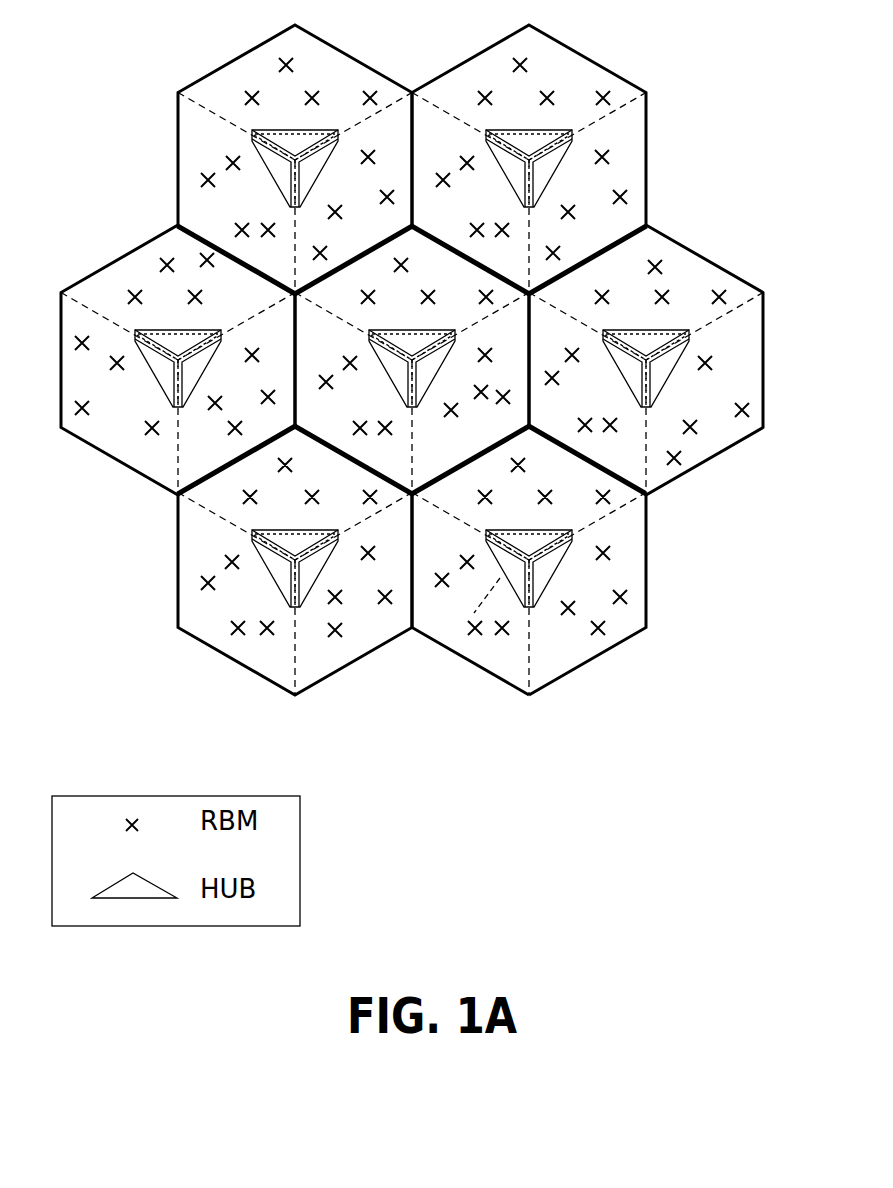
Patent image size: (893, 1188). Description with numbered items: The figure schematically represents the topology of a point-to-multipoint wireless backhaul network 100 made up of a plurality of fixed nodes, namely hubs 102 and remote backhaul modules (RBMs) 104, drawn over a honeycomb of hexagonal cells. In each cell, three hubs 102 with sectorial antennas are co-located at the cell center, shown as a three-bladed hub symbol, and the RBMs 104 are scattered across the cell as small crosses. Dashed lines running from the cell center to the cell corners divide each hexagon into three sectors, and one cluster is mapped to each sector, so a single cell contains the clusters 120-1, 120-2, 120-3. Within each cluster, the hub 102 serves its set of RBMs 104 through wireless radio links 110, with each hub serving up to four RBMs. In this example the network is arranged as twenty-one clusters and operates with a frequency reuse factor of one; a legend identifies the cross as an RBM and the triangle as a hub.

The wireless backhaul network 100 is at (152, 35).
The hub 102 is at (308, 575).
The remote backhaul module (RBM) 104 is at (367, 575).
The wireless link 110 is at (487, 600).
The cluster 120-1 is at (572, 478).
The cluster 120-2 is at (615, 623).
The cluster 120-3 is at (515, 657).